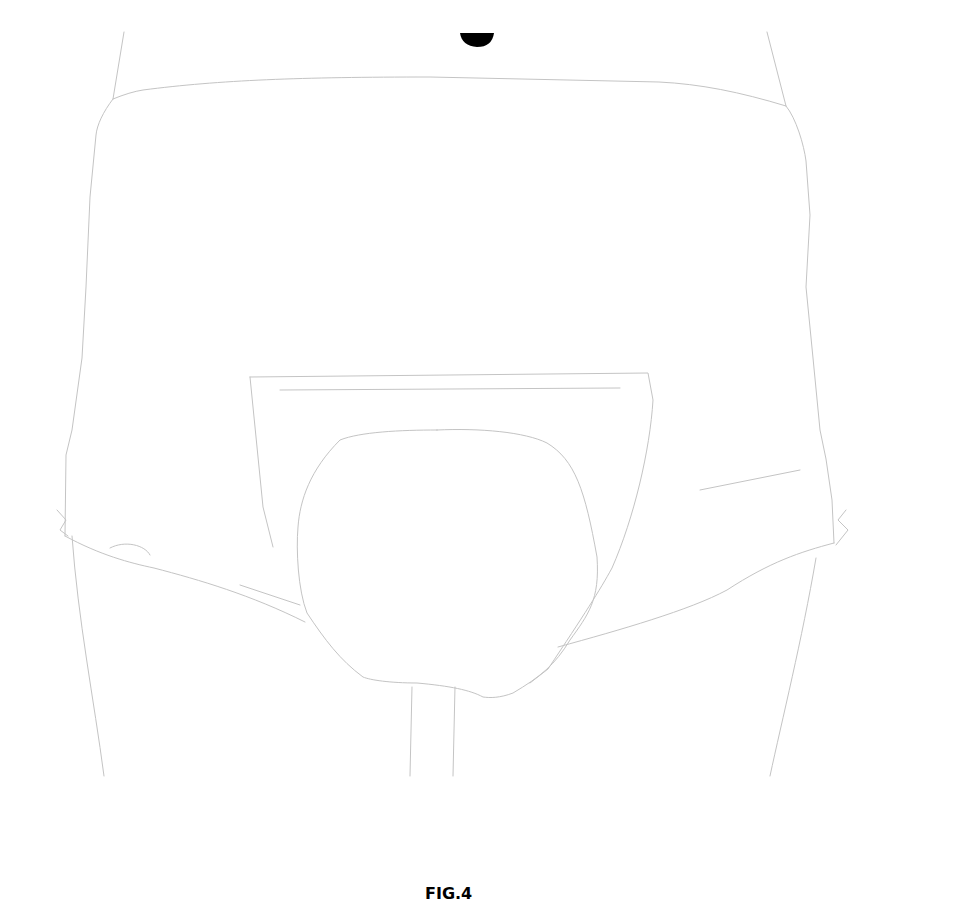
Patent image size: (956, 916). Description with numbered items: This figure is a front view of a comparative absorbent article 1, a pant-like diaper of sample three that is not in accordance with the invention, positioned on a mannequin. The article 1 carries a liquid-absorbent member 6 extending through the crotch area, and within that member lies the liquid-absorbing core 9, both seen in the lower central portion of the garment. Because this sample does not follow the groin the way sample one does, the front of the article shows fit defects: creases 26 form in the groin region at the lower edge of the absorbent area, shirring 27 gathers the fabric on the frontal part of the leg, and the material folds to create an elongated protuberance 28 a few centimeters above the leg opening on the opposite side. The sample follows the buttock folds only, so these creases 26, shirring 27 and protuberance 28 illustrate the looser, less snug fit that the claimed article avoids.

The absorbent article 1 is at (772, 133).
The liquid-absorbent member 6 is at (327, 423).
The liquid-absorbing core 9 is at (487, 588).
The creases 26 is at (258, 595).
The shirring 27 is at (140, 552).
The elongated protuberance 28 is at (761, 488).